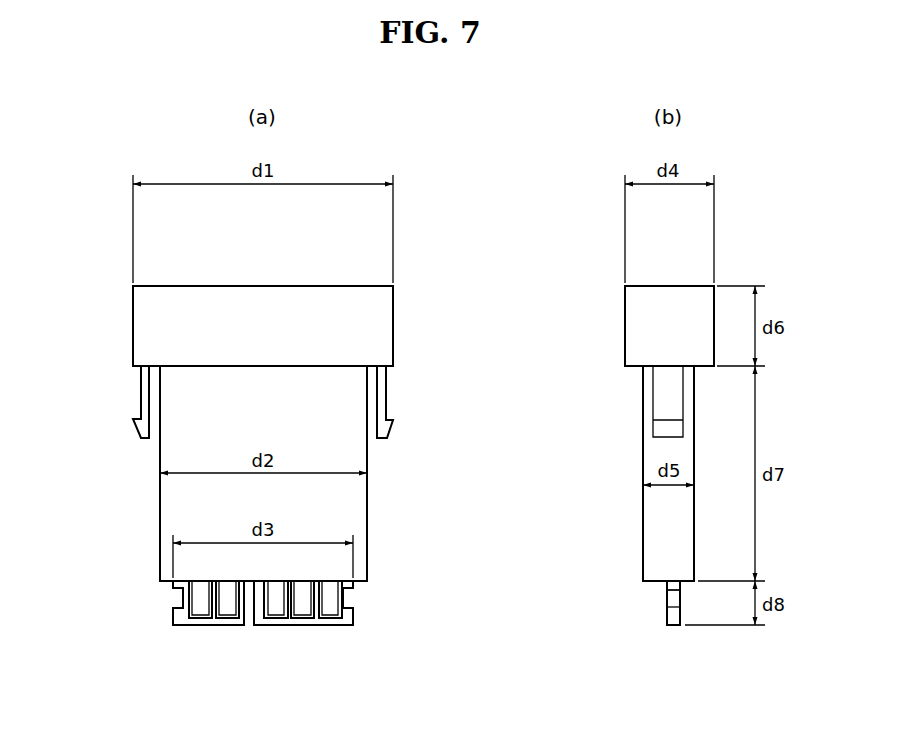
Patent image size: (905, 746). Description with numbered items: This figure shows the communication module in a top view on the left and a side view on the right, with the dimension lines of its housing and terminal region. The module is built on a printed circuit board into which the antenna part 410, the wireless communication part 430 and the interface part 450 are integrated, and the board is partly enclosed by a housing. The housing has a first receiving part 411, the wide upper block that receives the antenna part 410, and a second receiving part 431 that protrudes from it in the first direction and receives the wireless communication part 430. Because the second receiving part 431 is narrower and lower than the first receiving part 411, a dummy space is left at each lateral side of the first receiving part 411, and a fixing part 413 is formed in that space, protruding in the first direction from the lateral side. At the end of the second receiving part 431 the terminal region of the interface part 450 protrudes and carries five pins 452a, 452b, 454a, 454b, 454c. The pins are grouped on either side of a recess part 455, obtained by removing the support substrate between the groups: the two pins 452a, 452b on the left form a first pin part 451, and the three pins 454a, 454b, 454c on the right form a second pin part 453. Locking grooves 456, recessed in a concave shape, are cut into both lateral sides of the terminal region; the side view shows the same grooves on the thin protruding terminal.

The antenna part 410 is at (298, 284).
The first receiving part 411 is at (222, 302).
The fixing part 413 is at (145, 395).
The wireless communication part 430 is at (355, 508).
The second receiving part 431 is at (357, 455).
The interface part 450 is at (385, 601).
The first pin part 451 is at (178, 618).
The pin 452a is at (197, 612).
The pin 452b is at (225, 610).
The second pin part 453 is at (355, 618).
The pin 454a is at (273, 610).
The pin 454b is at (302, 612).
The pin 454c is at (330, 612).
The recess part 455 is at (247, 610).
The locking grooves 456 is at (178, 600).